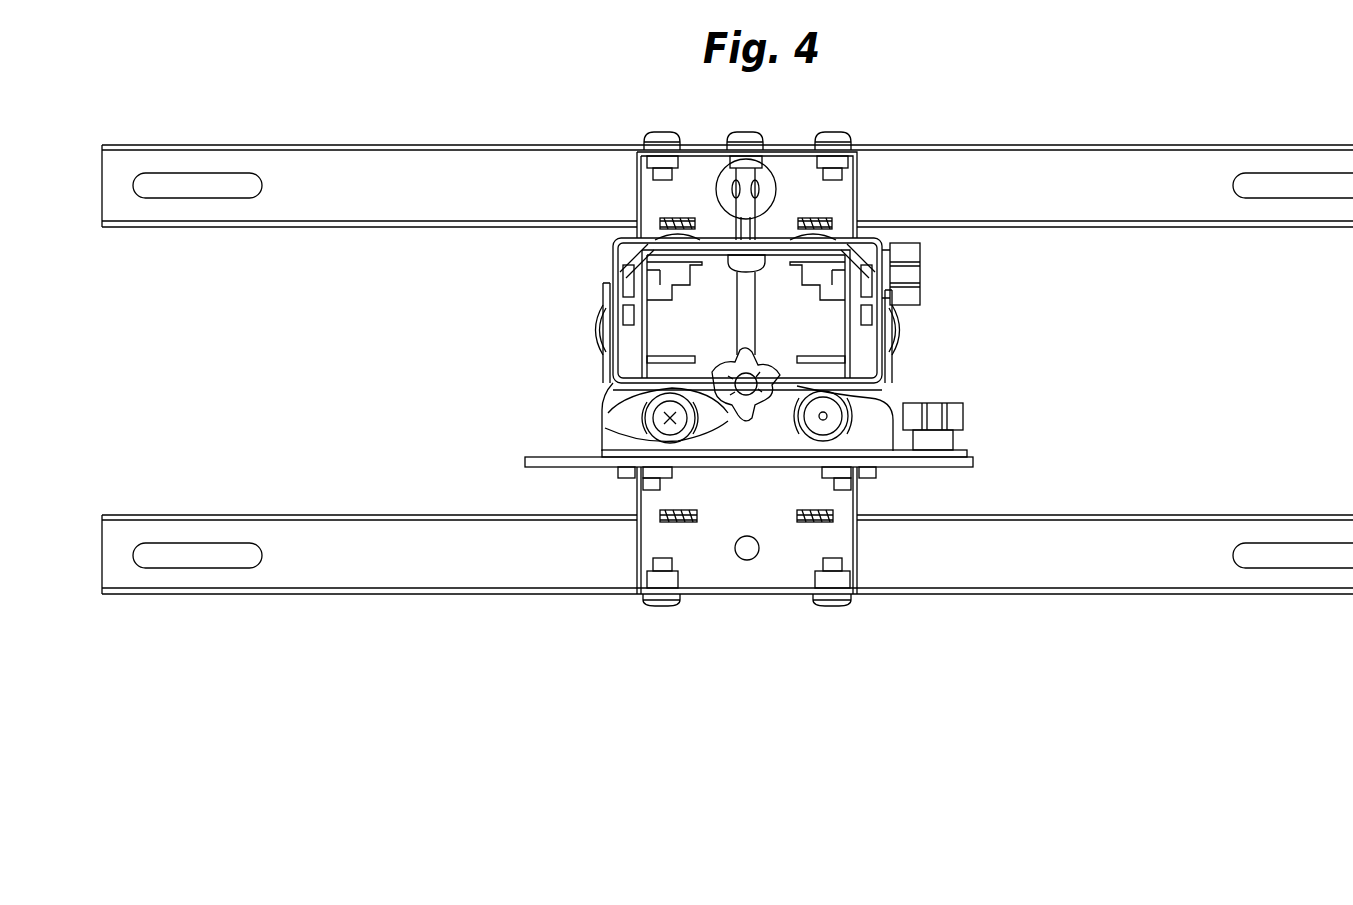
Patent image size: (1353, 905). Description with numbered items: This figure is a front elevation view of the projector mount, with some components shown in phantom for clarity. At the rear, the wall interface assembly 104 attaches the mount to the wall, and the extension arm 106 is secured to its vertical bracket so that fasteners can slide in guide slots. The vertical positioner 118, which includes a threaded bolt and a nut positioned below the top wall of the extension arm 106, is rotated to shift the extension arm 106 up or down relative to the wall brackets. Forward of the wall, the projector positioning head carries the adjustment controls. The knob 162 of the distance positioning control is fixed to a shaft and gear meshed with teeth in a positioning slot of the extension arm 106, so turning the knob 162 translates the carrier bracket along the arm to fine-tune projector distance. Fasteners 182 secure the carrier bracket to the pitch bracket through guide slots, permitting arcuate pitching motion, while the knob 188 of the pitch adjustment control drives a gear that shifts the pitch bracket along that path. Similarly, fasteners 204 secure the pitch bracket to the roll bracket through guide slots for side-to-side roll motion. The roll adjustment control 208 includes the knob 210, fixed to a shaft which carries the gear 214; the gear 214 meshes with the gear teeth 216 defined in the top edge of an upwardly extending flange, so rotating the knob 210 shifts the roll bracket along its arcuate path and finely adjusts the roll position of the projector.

The wall interface assembly 104 is at (1090, 177).
The extension arm 106 is at (857, 176).
The vertical positioner 118 is at (746, 130).
The knob 162 is at (768, 220).
The fasteners 182 is at (592, 327).
The knob 188 is at (905, 297).
The fasteners 204 is at (645, 417).
The roll adjustment control 208 is at (958, 410).
The knob 210 is at (660, 450).
The gear 214 is at (613, 382).
The gear teeth 216 is at (715, 412).